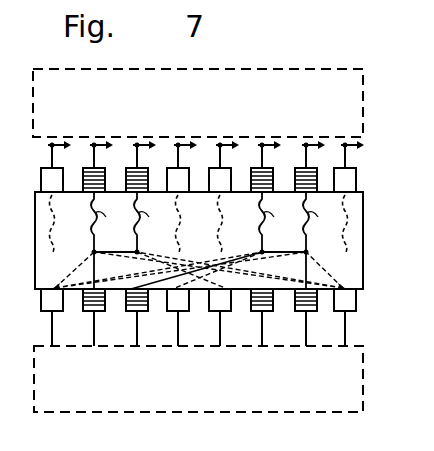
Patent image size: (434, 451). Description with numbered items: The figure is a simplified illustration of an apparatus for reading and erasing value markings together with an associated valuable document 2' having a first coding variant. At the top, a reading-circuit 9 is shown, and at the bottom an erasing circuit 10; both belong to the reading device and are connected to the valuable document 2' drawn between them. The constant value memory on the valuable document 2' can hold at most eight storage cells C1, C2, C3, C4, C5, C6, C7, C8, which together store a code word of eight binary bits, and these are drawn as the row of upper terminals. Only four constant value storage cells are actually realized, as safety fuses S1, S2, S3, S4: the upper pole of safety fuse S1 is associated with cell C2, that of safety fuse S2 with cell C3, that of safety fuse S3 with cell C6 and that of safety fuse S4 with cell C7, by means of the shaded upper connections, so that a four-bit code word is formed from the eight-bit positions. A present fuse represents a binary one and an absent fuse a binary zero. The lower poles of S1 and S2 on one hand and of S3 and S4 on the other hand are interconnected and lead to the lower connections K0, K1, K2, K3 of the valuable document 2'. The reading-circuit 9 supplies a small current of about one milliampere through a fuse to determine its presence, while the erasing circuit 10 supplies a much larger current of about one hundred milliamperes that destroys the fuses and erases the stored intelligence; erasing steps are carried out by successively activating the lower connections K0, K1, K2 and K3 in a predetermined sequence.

The reading-circuit 9 is at (356, 85).
The erasing circuit 10 is at (353, 367).
The valuable document 2' is at (209, 243).
The storage cell C1 is at (56, 173).
The storage cell C2 is at (98, 173).
The storage cell C3 is at (141, 173).
The storage cell C4 is at (182, 173).
The storage cell C5 is at (224, 173).
The storage cell C6 is at (266, 173).
The storage cell C7 is at (310, 173).
The storage cell C8 is at (349, 173).
The safety fuse S1 is at (107, 222).
The safety fuse S2 is at (150, 222).
The safety fuse S3 is at (275, 222).
The safety fuse S4 is at (319, 222).
The lower connection K0 is at (99, 314).
The lower connection K1 is at (142, 314).
The lower connection K2 is at (268, 314).
The lower connection K3 is at (313, 314).